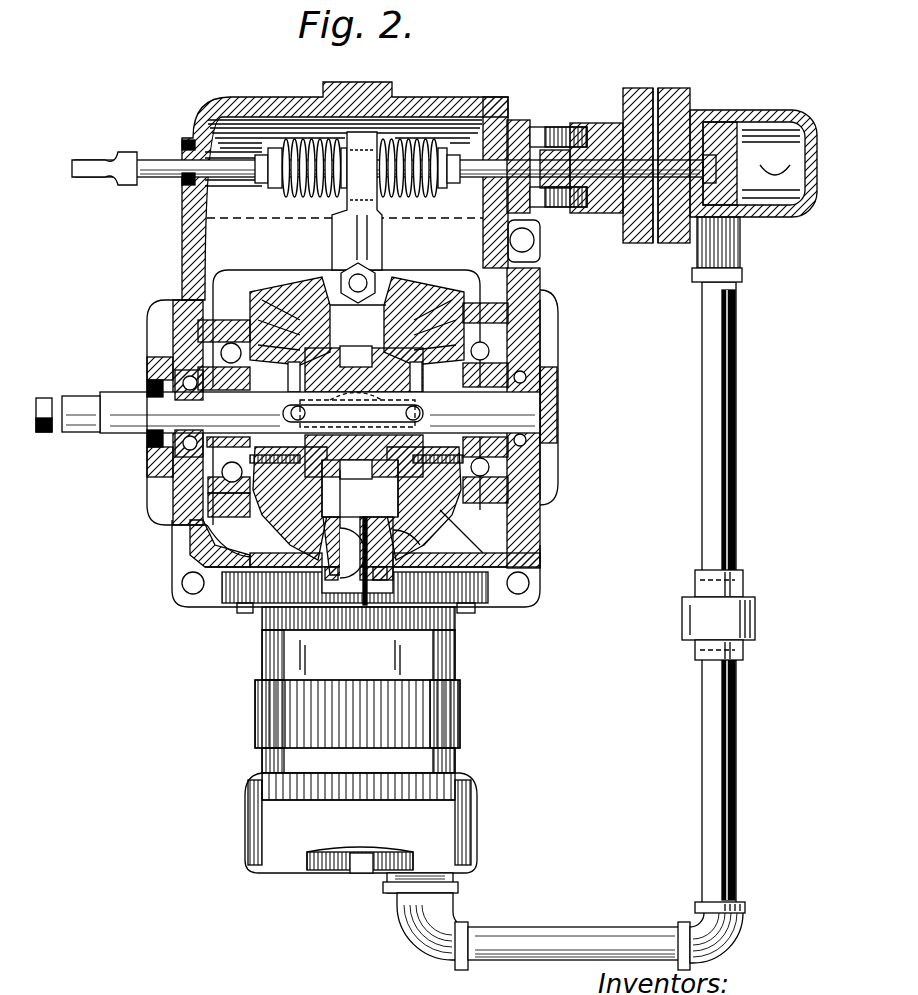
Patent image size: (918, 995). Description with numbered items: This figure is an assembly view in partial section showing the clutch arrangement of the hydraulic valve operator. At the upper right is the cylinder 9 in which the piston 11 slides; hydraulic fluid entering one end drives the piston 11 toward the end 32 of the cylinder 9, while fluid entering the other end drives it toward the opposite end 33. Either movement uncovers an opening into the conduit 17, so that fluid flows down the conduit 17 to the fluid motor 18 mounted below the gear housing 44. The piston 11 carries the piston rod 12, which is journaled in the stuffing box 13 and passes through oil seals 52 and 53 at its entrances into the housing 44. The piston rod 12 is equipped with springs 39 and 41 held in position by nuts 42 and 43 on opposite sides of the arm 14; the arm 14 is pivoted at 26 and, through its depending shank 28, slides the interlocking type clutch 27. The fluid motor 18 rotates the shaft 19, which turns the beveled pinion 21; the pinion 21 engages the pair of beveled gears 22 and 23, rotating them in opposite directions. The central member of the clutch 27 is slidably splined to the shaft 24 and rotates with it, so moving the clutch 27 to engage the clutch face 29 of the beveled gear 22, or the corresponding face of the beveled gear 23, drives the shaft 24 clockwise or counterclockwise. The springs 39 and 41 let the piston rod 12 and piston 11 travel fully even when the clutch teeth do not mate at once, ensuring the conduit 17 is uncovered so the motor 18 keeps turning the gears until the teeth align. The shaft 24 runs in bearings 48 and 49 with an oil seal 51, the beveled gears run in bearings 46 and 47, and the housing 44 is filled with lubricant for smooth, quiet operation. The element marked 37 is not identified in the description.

The cylinder 9 is at (716, 118).
The piston 11 is at (728, 160).
The piston rod 12 is at (530, 160).
The stuffing box 13 is at (578, 212).
The arm 14 is at (373, 247).
The conduit 17 is at (705, 528).
The fluid motor 18 is at (462, 712).
The shaft 19 is at (365, 517).
The beveled pinion 21 is at (413, 537).
The beveled gear 22 is at (362, 316).
The beveled gear 23 is at (302, 488).
The shaft 24 is at (44, 432).
The pivot 26 is at (342, 270).
The interlocking type clutch 27 is at (339, 493).
The depending shank 28 is at (398, 287).
The clutch face 29 is at (411, 488).
The end of cylinder 32 is at (795, 205).
The end of cylinder 33 is at (678, 210).
The left bevel gear 37 is at (278, 332).
The spring 39 is at (296, 140).
The spring 41 is at (410, 140).
The nut 42 is at (272, 148).
The nut 43 is at (455, 150).
The gear housing 44 is at (525, 325).
The bearing 46 is at (225, 475).
The bearing 47 is at (489, 356).
The bearing 48 is at (186, 450).
The bearing 49 is at (522, 443).
The oil seal 51 is at (150, 393).
The oil seal 52 is at (182, 185).
The oil seal 53 is at (505, 128).